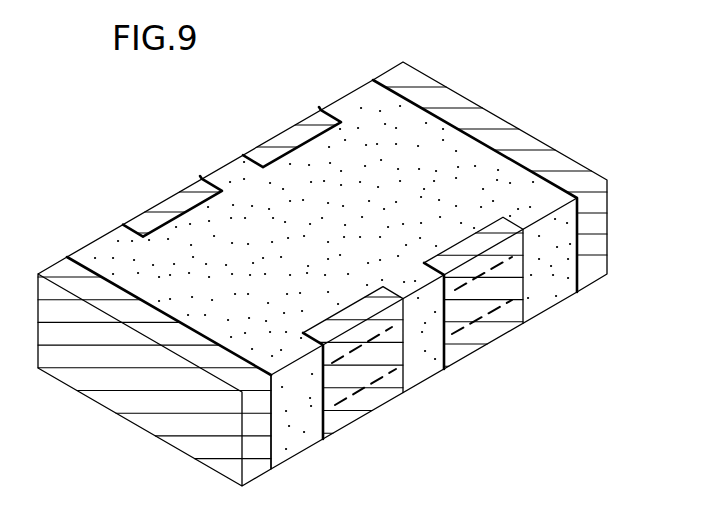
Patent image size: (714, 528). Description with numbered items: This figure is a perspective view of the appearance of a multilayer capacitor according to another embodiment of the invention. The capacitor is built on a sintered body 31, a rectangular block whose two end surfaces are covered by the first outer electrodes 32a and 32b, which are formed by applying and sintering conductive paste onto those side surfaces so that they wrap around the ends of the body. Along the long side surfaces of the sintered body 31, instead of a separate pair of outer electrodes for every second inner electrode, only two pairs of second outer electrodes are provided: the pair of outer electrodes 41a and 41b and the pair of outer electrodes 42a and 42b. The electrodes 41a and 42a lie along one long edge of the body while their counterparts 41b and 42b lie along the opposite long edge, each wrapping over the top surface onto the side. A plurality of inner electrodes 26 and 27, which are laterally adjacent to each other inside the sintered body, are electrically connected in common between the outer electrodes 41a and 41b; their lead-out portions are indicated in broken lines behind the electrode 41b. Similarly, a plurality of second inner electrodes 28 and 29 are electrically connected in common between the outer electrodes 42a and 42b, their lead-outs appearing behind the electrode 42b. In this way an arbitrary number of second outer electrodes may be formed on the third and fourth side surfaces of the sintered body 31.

The sintered body 31 is at (368, 70).
The first outer electrode 32a is at (117, 383).
The first outer electrode 32b is at (523, 130).
The outer electrode 41a is at (166, 204).
The outer electrode 42a is at (312, 120).
The outer electrode 41b is at (380, 397).
The outer electrode 42b is at (507, 327).
The inner electrode 26 is at (330, 408).
The inner electrode 27 is at (392, 375).
The second inner electrode 28 is at (460, 335).
The second inner electrode 29 is at (515, 302).